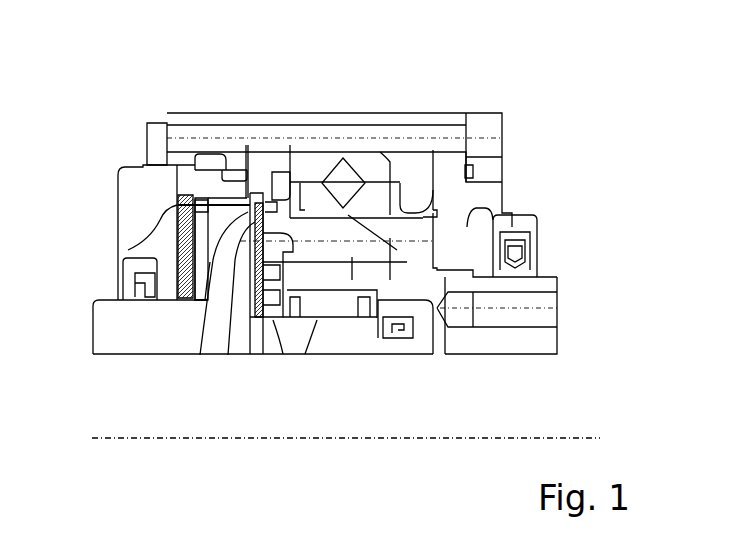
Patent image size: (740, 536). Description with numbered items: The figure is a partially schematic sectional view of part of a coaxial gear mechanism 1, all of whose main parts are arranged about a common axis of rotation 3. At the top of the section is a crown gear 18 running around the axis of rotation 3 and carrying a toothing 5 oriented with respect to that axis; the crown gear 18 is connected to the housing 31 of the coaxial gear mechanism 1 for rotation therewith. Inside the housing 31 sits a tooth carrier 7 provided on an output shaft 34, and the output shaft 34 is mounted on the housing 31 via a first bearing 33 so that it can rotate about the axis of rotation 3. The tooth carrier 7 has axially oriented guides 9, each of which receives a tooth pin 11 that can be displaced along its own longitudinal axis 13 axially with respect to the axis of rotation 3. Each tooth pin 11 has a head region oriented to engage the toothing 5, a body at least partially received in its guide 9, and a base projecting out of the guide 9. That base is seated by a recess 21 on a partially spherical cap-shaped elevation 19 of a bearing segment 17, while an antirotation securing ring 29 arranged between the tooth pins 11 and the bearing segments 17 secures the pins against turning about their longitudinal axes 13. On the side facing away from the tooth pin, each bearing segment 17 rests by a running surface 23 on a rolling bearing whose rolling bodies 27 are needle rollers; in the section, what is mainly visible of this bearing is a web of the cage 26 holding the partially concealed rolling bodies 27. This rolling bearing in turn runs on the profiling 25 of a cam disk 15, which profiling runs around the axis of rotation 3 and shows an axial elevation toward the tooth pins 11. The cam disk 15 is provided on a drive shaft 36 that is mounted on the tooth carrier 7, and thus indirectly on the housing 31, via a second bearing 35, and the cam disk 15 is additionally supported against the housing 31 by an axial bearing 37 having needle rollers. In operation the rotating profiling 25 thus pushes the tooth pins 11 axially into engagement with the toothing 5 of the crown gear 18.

The coaxial gear mechanism 1 is at (110, 116).
The axis of rotation 3 is at (578, 436).
The toothing 5 is at (488, 228).
The tooth carrier 7 is at (439, 115).
The guides 9 is at (340, 355).
The tooth pins 11 is at (400, 152).
The longitudinal axes 13 is at (375, 355).
The cam disk 15 is at (200, 118).
The bearing segment 17 is at (250, 355).
The crown gear 18 is at (512, 213).
The partially spherical cap-shaped elevation 19 is at (308, 150).
The recess 21 is at (278, 357).
The running surface 23 is at (229, 355).
The profiling 25 is at (200, 356).
The cage 26 is at (263, 160).
The rolling bodies 27 is at (240, 166).
The antirotation securing ring 29 is at (272, 355).
The housing 31 is at (284, 118).
The first bearing 33 is at (355, 150).
The output shaft 34 is at (492, 362).
The second bearing 35 is at (312, 355).
The drive shaft 36 is at (135, 355).
The axial bearing 37 is at (128, 251).